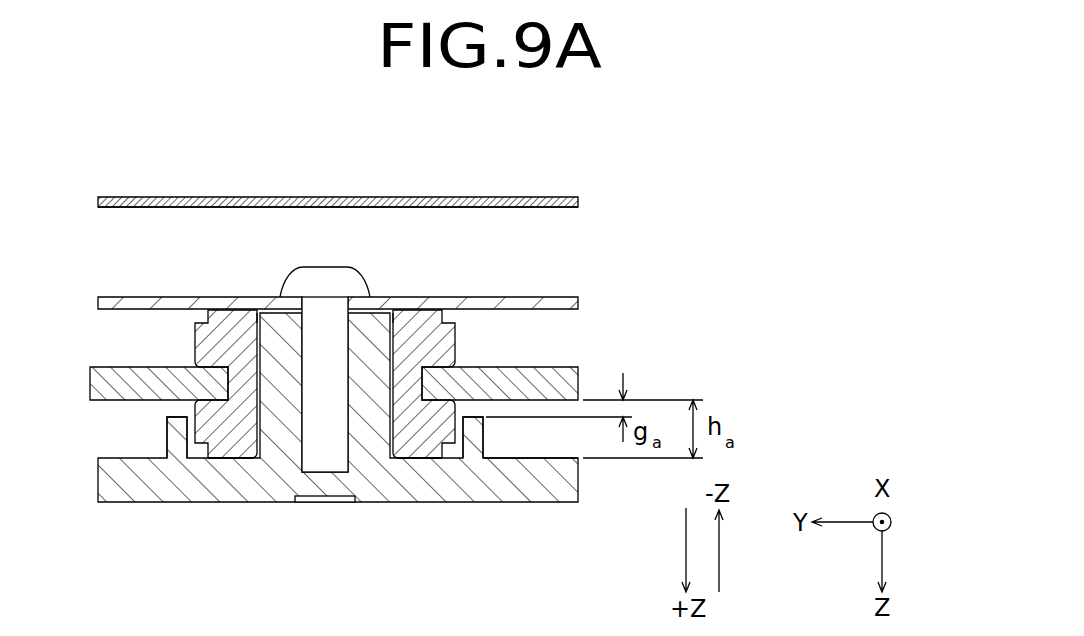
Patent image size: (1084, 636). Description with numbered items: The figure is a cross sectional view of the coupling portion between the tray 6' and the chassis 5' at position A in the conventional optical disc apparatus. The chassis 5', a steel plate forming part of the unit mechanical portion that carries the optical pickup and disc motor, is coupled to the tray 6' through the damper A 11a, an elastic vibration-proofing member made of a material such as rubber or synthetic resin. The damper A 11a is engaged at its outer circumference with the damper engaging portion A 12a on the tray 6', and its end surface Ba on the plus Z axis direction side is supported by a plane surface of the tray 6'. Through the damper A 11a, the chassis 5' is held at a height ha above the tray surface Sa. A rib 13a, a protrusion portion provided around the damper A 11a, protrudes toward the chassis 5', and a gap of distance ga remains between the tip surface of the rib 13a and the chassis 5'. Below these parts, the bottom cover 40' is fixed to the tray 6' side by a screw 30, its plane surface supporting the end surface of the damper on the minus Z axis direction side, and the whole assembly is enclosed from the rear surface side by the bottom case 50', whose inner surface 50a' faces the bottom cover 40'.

The bottom case 50' is at (338, 174).
The inner surface of top cover 50a' is at (365, 232).
The bottom cover 40' is at (338, 273).
The screw 30 is at (326, 267).
The damper engaging portion A 12a is at (281, 324).
The damper A 11a is at (413, 331).
The chassis 5' is at (334, 355).
The rib 13a is at (175, 431).
The end surface of damper A on the +Z axis direction side Ba is at (227, 472).
The tray surface Sa is at (500, 450).
The tray 6' is at (338, 441).